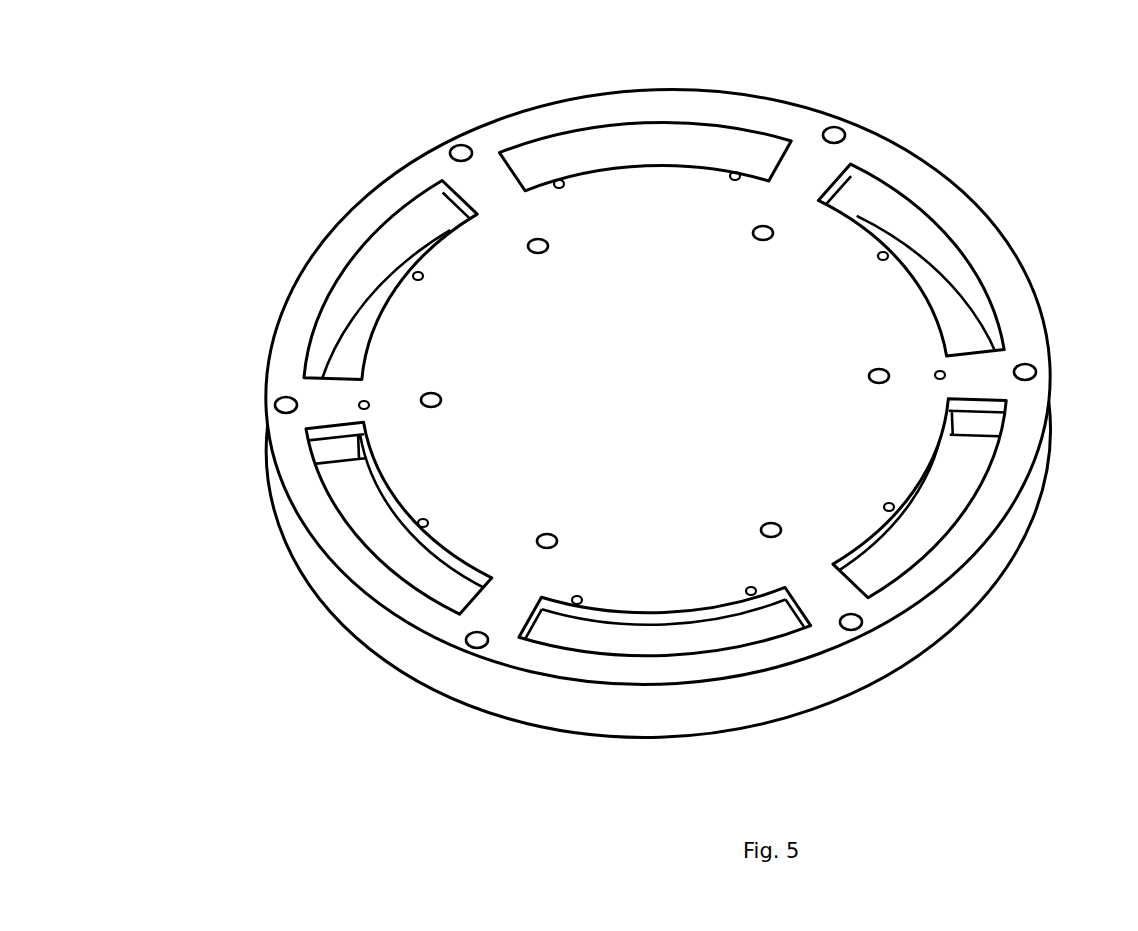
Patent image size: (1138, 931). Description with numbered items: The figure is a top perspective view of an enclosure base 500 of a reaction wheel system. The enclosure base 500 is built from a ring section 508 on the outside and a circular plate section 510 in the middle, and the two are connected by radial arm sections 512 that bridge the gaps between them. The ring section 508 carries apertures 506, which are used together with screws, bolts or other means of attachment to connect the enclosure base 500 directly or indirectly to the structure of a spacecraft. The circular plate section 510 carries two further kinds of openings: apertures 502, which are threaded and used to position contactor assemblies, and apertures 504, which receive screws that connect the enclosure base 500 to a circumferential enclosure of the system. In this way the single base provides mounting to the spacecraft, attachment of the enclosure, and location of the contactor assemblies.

The enclosure base 500 is at (333, 173).
The apertures 502 is at (892, 372).
The apertures 504 is at (735, 173).
The apertures 506 is at (466, 639).
The ring section 508 is at (318, 284).
The circular plate section 510 is at (473, 272).
The radial arm sections 512 is at (829, 593).